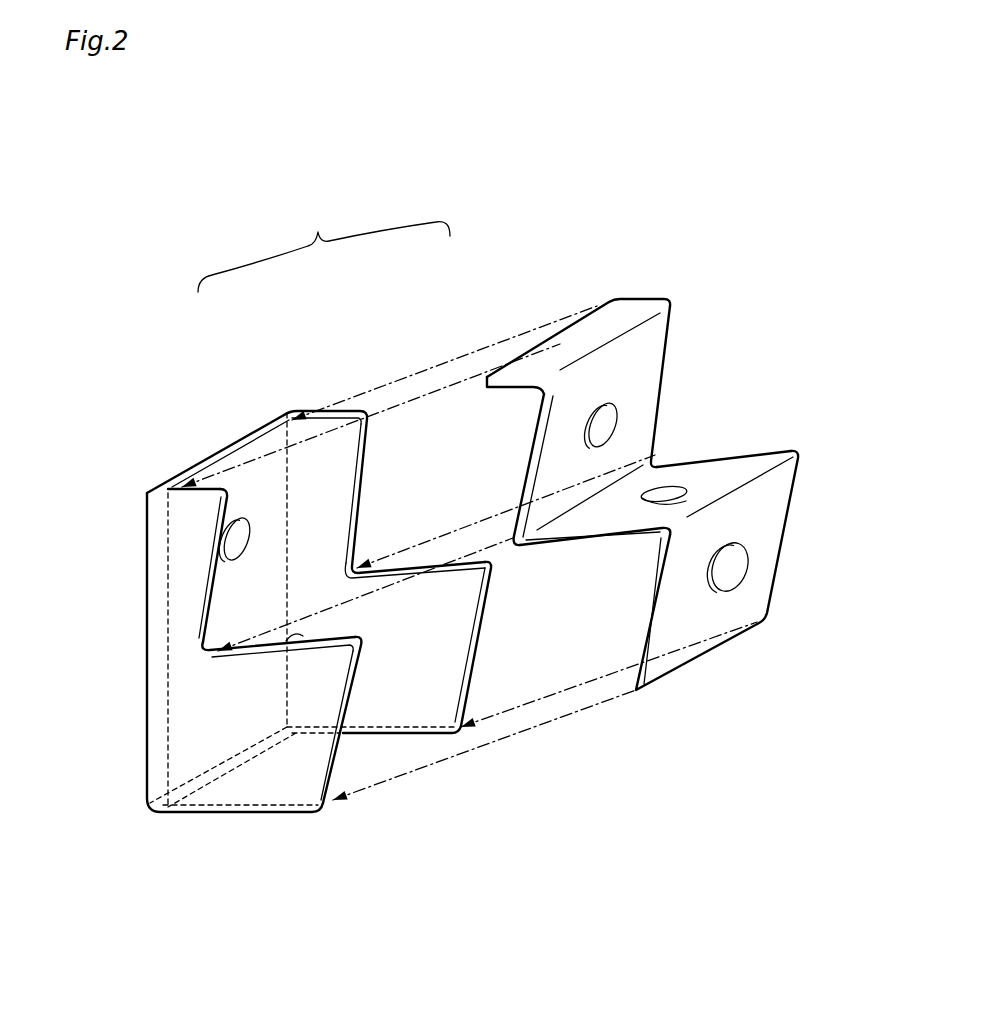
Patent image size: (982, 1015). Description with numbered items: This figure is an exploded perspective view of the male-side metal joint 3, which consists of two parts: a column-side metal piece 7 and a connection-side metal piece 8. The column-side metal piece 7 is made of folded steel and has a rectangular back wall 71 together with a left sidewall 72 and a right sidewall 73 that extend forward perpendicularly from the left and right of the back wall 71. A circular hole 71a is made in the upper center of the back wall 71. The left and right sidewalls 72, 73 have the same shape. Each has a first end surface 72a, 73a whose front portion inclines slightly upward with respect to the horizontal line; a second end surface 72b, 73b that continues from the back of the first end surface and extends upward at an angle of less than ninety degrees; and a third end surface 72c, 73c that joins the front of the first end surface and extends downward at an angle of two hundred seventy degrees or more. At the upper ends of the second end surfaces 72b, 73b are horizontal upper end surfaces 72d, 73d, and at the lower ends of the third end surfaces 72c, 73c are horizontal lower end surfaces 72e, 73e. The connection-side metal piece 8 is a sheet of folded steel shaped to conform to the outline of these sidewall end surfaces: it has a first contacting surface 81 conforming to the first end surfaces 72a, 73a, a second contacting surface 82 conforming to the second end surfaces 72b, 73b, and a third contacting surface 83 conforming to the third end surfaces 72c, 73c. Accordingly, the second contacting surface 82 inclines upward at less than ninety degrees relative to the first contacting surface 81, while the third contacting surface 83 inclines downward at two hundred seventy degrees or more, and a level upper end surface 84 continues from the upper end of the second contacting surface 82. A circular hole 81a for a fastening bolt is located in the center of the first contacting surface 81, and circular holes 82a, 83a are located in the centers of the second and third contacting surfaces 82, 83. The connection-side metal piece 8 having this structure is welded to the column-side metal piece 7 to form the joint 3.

The male-side metal joint 3 is at (324, 242).
The column-side metal piece 7 is at (200, 390).
The connection-side metal piece 8 is at (455, 323).
The back wall 71 is at (250, 478).
The circular hole 71a is at (247, 551).
The left sidewall 72 is at (183, 638).
The first end surface 72a is at (297, 641).
The second end surface 72b is at (212, 601).
The third end surface 72c is at (345, 712).
The upper end surface 72d is at (200, 503).
The lower end surface 72e is at (195, 817).
The right sidewall 73 is at (330, 450).
The first end surface 73a is at (455, 568).
The second end surface 73b is at (347, 533).
The third end surface 73c is at (473, 628).
The upper end surface 73d is at (296, 414).
The lower end surface 73e is at (420, 737).
The first contacting surface 81 is at (752, 472).
The circular hole 81a is at (663, 490).
The second contacting surface 82 is at (630, 362).
The circular hole 82a is at (608, 410).
The third contacting surface 83 is at (763, 560).
The circular hole 83a is at (725, 565).
The upper end surface 84 is at (597, 323).